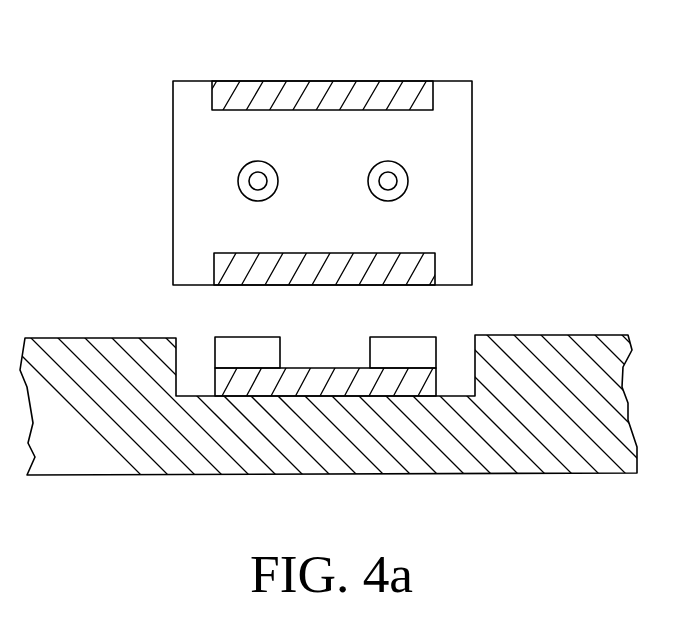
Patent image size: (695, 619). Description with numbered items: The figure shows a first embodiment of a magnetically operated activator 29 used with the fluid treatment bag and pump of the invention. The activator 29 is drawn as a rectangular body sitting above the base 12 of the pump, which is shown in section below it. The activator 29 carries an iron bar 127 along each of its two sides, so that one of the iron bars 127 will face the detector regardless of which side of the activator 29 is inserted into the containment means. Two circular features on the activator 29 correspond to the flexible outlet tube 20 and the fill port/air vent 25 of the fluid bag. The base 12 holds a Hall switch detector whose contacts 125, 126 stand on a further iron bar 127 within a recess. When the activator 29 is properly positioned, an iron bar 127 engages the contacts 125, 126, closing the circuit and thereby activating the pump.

The base 12 is at (210, 450).
The activator 29 is at (225, 80).
The iron bar 127 is at (433, 98).
The flexible outlet tube 20 is at (240, 167).
The fill port/air vent 25 is at (400, 163).
The contact 125 is at (223, 338).
The contact 126 is at (430, 337).